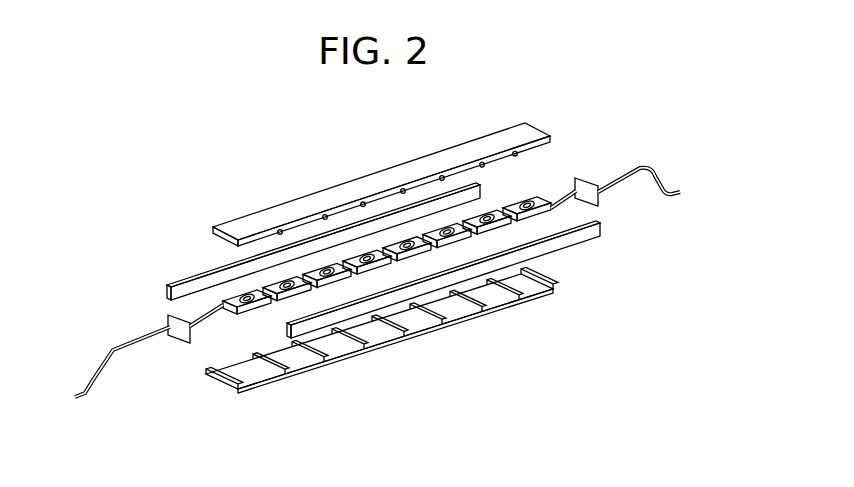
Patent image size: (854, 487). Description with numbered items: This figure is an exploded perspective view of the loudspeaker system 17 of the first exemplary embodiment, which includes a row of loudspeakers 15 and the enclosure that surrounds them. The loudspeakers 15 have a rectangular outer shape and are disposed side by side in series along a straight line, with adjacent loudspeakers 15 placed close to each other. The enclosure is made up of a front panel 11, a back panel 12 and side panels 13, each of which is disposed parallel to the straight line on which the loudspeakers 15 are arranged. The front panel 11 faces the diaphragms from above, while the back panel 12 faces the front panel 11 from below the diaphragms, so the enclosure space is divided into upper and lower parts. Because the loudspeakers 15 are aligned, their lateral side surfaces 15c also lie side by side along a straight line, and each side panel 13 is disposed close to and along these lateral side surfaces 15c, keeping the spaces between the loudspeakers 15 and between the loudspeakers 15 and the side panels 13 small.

The front panel 11 is at (463, 153).
The back panel 12 is at (247, 375).
The side panels 13 is at (177, 280).
The loudspeakers 15 is at (240, 297).
The lateral side surfaces 15c is at (297, 295).
The loudspeaker system 17 is at (450, 360).